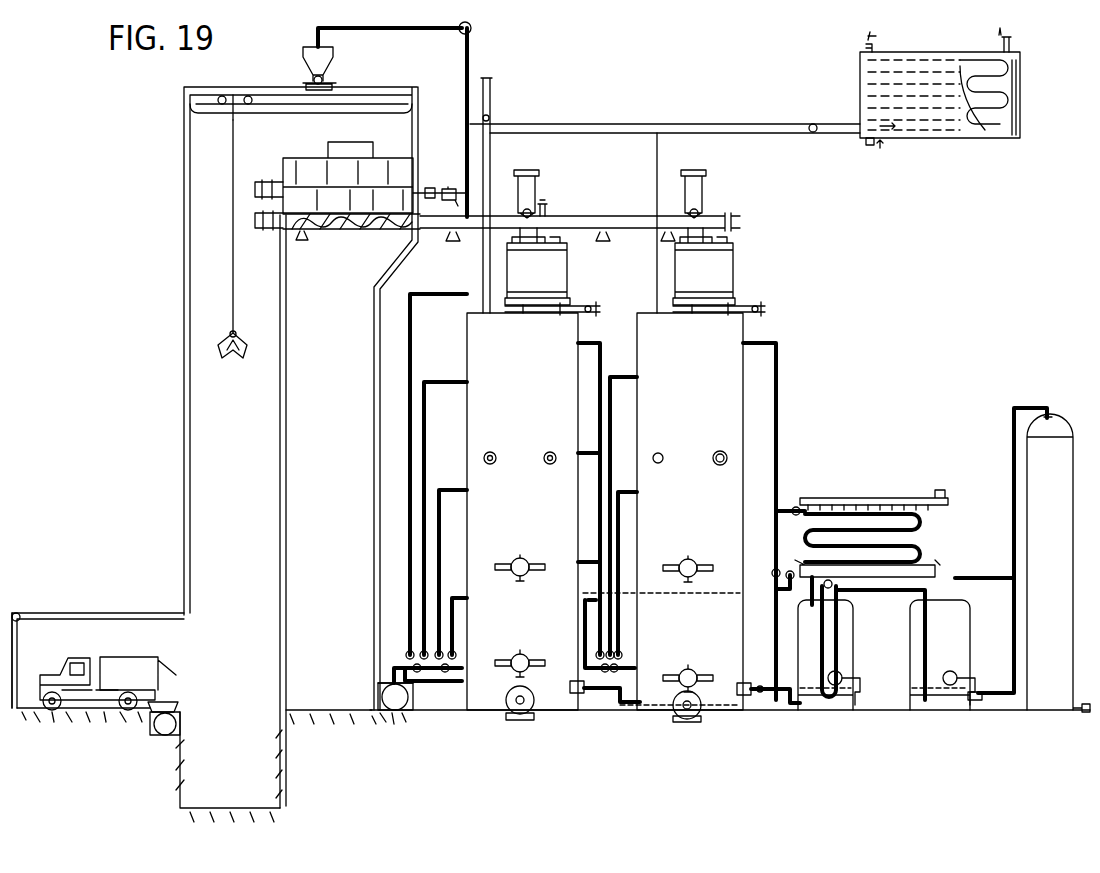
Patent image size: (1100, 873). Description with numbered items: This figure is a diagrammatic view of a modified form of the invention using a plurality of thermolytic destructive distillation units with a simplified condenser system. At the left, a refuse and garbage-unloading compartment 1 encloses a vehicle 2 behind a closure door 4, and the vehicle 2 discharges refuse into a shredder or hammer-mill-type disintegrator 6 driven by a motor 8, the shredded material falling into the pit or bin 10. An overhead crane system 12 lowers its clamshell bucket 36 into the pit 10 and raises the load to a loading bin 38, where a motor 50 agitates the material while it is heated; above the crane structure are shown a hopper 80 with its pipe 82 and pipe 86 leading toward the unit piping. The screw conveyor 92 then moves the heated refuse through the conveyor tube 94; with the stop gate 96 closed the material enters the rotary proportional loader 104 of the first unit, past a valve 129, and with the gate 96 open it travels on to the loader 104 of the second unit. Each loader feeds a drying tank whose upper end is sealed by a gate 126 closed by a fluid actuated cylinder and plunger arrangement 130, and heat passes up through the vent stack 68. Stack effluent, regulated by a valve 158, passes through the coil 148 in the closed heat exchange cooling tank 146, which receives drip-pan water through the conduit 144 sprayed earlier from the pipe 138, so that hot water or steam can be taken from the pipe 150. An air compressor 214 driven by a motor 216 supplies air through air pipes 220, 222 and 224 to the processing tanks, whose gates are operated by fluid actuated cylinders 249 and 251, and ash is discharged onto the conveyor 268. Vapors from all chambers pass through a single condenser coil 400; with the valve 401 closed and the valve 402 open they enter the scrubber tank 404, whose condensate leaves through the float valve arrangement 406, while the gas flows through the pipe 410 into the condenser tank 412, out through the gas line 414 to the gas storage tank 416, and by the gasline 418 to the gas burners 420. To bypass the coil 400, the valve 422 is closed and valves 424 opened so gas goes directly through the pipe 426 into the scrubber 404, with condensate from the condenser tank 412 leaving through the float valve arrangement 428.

The refuse and garbage-unloading compartment 1 is at (118, 628).
The vehicle 2 is at (122, 665).
The closure door 4 is at (18, 648).
The shredder or hammer-mill-type disintegrator 6 is at (166, 702).
The motor 8 is at (160, 726).
The pit or bin 10 is at (262, 775).
The overhead crane system 12 is at (297, 121).
The clamshell bucket 36 is at (240, 352).
The loading bin 38 is at (284, 169).
The motor 50 is at (255, 200).
The vent stack 68 is at (482, 283).
The hopper 80 is at (330, 60).
The pipe 82 is at (409, 30).
The pipe 86 is at (471, 48).
The screw conveyor 92 is at (335, 230).
The conveyor tube 94 is at (600, 215).
The stop gate 96 is at (547, 208).
The rotary proportional loader 104 is at (576, 269).
The gate 126 is at (524, 312).
The valve 129 is at (527, 176).
The fluid actuated cylinder and plunger arrangement 130 is at (588, 306).
The pipe 138 is at (850, 505).
The conduit 144 is at (866, 146).
The closed heat exchange cooling tank 146 is at (1012, 142).
The coil 148 is at (1012, 70).
The pipe 150 is at (1012, 44).
The valve 158 is at (532, 478).
The air compressor 214 is at (417, 704).
The motor 216 is at (376, 697).
The air pipe 220 is at (439, 552).
The air pipe 222 is at (424, 503).
The air pipe 224 is at (412, 400).
The fluid actuated cylinder 249 is at (520, 653).
The fluid actuated cylinder 251 is at (519, 557).
The conveyor 268 is at (508, 712).
The condenser coil 400 is at (920, 520).
The valve 401 is at (950, 575).
The valve 402 is at (810, 590).
The scrubber tank 404 is at (850, 635).
The float valve arrangement 406 is at (858, 672).
The pipe 410 is at (842, 593).
The condenser tank 412 is at (967, 625).
The gas line 414 is at (1010, 598).
The gas storage tank 416 is at (1058, 428).
The gasline 418 is at (1010, 447).
The gas burners 420 is at (577, 695).
The valve 422 is at (798, 505).
The valves 424 is at (772, 575).
The pipe 426 is at (826, 700).
The float valve arrangement 428 is at (982, 698).